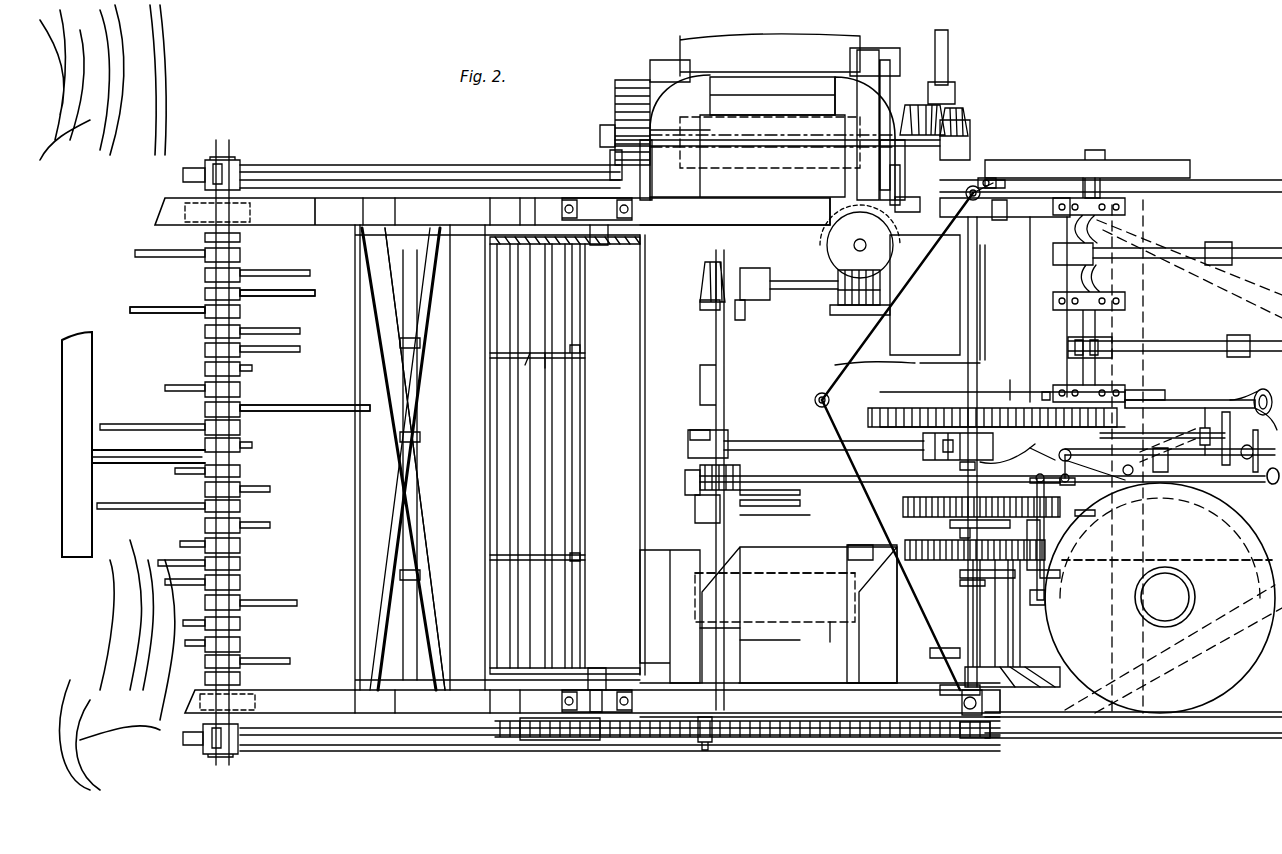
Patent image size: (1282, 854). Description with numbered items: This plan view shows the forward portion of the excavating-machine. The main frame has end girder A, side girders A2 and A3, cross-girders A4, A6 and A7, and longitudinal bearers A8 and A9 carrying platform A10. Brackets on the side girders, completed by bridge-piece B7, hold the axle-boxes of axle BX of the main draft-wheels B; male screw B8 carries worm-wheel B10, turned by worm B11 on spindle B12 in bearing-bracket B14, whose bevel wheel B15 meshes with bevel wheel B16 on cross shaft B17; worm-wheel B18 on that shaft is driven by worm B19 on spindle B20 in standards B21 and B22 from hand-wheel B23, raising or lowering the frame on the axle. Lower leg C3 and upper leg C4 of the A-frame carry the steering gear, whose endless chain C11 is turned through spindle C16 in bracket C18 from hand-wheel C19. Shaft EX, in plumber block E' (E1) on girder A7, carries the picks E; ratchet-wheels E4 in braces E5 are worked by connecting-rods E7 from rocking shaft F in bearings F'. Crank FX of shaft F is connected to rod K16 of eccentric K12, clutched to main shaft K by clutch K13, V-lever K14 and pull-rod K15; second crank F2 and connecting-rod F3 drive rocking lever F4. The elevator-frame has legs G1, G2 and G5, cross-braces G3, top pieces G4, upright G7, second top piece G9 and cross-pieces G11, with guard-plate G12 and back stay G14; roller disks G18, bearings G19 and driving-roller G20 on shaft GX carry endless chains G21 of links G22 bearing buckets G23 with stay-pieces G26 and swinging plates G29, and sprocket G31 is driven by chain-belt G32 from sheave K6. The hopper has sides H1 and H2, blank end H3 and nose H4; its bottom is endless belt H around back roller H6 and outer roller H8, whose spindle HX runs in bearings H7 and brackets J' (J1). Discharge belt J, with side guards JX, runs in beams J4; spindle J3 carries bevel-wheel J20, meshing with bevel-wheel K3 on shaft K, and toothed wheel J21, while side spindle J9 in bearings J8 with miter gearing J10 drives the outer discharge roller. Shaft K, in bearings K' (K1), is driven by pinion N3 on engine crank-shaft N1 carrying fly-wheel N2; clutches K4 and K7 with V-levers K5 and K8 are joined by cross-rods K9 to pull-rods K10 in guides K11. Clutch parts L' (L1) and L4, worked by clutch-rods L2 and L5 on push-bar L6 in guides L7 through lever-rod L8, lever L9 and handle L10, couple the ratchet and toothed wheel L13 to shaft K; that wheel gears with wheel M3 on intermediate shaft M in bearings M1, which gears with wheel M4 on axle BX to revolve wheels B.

The end plate A is at (90, 376).
The upper frame bar A2 is at (492, 211).
The lower frame bar A3 is at (592, 701).
The cross rod A4 is at (358, 388).
The disc wheel A6 is at (1140, 688).
The side rail A7 is at (290, 502).
The bracket A8 is at (704, 573).
The bracket rod A9 is at (1205, 564).
The upright post A10 is at (998, 344).
The driving shaft bracket B is at (936, 648).
The worm B7 is at (878, 285).
The worm wheel B8 is at (860, 241).
The bearing block B10 is at (860, 319).
The worm shaft B11 is at (843, 292).
The connecting rod B12 is at (800, 290).
The bracket B14 is at (749, 318).
The coupling block B15 is at (760, 278).
The bevel pinion B16 is at (709, 282).
The collar B17 is at (728, 436).
The worm B18 is at (740, 471).
The link B19 is at (795, 495).
The shaft B20 is at (816, 476).
The bearing B21 is at (685, 488).
The crank link B22 is at (1130, 473).
The link rod B23 is at (1232, 514).
The shaft BX is at (868, 377).
The rod C3 is at (1240, 252).
The track rail C4 is at (1222, 188).
The disc guide C11 is at (1160, 548).
The eye C16 is at (1253, 405).
The rod C18 is at (1218, 445).
The slide block C19 is at (1223, 472).
The knife bar E is at (147, 484).
The knife E' is at (277, 424).
The knife carrier E1 is at (258, 225).
The end block E4 is at (176, 474).
The nut E5 is at (228, 158).
The guide rail E7 is at (415, 172).
The knife EX is at (202, 276).
The foot F is at (711, 744).
The upright F' is at (725, 480).
The bearing F2 is at (680, 513).
The arm F3 is at (825, 500).
The rod F4 is at (789, 580).
The block FX is at (688, 446).
The lower frame post G1 is at (437, 701).
The upper frame post G2 is at (395, 211).
The diagonal brace G3 is at (405, 400).
The bearing plate G4 is at (545, 200).
The lower beam G5 is at (820, 700).
The bracket G7 is at (902, 212).
The upper beam G9 is at (735, 211).
The rod G11 is at (735, 628).
The frame brace G12 is at (385, 242).
The post G14 is at (518, 234).
The hatched rail G18 is at (520, 720).
The plate G19 is at (576, 718).
The slat G20 is at (580, 409).
The side bar G21 is at (610, 240).
The cross bar G22 is at (580, 356).
The upright bar G23 is at (420, 300).
The connector G26 is at (558, 362).
The plate G29 is at (659, 170).
The chain block G31 is at (542, 737).
The chain G32 is at (797, 737).
The bracket GX is at (596, 248).
The casing H is at (796, 615).
The casing post H1 is at (852, 628).
The casing post H2 is at (685, 610).
The casing bottom H3 is at (770, 657).
The roller H4 is at (840, 94).
The casing H6 is at (837, 648).
The hood H7 is at (895, 138).
The roller body H8 is at (747, 156).
The roller core HX is at (803, 150).
The cylinder J is at (770, 55).
The shaft J' is at (777, 172).
The pinion J1 is at (610, 150).
The gear J3 is at (614, 111).
The plate J4 is at (887, 46).
The block J8 is at (955, 90).
The post J9 is at (945, 46).
The bevel gear J10 is at (945, 110).
The bevel pinion J20 is at (966, 127).
The collar J21 is at (600, 130).
The block JX is at (682, 62).
The bar K is at (1002, 398).
The rack K' is at (982, 418).
The pivot K1 is at (976, 704).
The link K3 is at (984, 178).
The link K4 is at (1005, 180).
The post K5 is at (986, 231).
The chain block K6 is at (968, 738).
The pivot K7 is at (991, 218).
The pivot bracket K8 is at (940, 685).
The lever K9 is at (891, 462).
The stud K10 is at (1049, 387).
The lever pivot K11 is at (822, 394).
The slide block K12 is at (920, 452).
The link K13 is at (960, 460).
The rod K14 is at (1008, 403).
The rod K15 is at (1151, 504).
The rod K16 is at (803, 438).
The gear L' is at (981, 514).
The shaft L1 is at (965, 534).
The lever L2 is at (1042, 522).
The rod L4 is at (960, 578).
The block L5 is at (1035, 584).
The post L6 is at (1044, 567).
The block L7 is at (1043, 604).
The block L8 is at (1081, 507).
The block L9 is at (1106, 521).
The block L10 is at (1170, 460).
The gear L13 is at (975, 550).
The standard M is at (1014, 635).
The brace M1 is at (1040, 670).
The hub M3 is at (1147, 597).
The block M4 is at (890, 546).
The bearing N1 is at (1080, 290).
The bar N2 is at (1140, 172).
The block N3 is at (1132, 396).